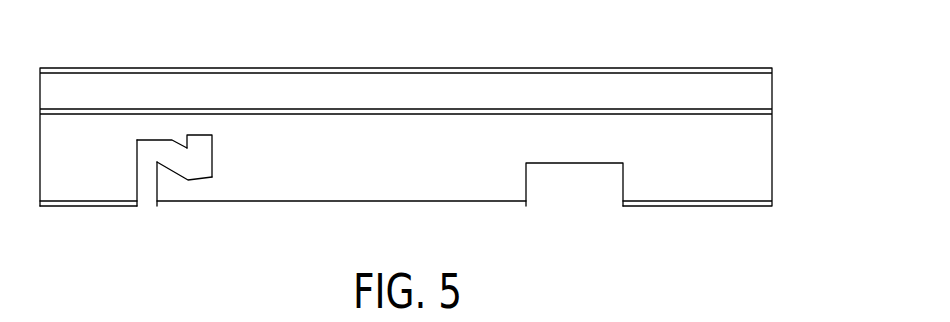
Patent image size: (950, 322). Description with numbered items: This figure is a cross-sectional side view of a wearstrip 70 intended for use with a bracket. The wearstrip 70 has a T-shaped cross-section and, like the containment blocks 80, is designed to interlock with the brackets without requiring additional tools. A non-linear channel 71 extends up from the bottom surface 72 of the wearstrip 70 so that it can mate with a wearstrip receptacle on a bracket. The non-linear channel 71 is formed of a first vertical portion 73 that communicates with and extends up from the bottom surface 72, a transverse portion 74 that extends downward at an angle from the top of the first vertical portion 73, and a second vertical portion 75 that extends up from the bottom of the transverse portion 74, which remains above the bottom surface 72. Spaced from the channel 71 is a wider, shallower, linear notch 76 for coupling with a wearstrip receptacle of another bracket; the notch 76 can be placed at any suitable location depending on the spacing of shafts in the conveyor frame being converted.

The wearstrip 70 is at (772, 160).
The non-linear channel 71 is at (144, 209).
The bottom surface 72 is at (75, 216).
The first vertical portion 73 is at (161, 178).
The transverse portion 74 is at (146, 134).
The second vertical portion 75 is at (195, 132).
The linear notch 76 is at (577, 192).
The containment blocks 80 is at (641, 320).